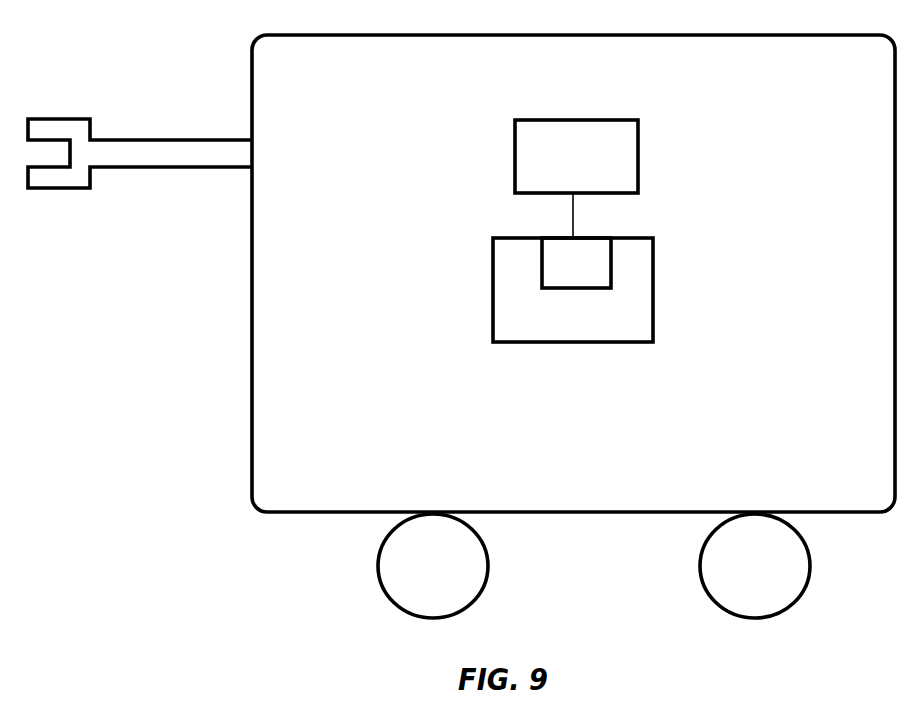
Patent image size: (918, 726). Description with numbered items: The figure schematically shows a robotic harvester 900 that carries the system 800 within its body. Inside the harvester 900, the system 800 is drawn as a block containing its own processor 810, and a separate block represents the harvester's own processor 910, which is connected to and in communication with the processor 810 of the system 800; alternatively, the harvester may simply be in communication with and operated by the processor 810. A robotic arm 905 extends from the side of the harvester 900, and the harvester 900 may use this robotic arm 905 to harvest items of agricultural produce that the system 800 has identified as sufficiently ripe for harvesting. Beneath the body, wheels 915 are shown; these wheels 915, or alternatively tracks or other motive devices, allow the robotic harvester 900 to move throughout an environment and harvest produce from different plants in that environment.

The robotic harvester 900 is at (348, 78).
The robotic arm 905 is at (147, 145).
The processor 910 is at (595, 165).
The system 800 is at (598, 325).
The processor 810 is at (600, 278).
The wheels 915 is at (462, 555).